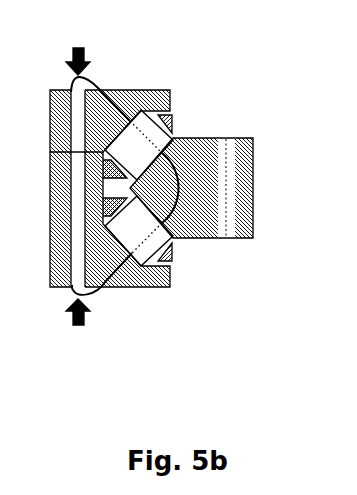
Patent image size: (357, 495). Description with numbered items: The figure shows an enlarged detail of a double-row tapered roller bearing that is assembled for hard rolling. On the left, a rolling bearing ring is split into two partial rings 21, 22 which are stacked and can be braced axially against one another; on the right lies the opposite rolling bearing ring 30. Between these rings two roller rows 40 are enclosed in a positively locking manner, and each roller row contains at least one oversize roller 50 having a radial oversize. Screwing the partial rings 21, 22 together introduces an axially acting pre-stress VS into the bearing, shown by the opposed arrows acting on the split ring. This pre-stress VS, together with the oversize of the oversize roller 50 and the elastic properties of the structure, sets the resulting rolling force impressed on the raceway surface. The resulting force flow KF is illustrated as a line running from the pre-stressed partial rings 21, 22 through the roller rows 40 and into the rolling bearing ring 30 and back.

The partial ring 21 is at (160, 90).
The partial ring 22 is at (120, 287).
The rolling bearing ring 30 is at (243, 177).
The roller rows 40 is at (173, 132).
The oversize roller 50 is at (153, 258).
The force flow KF is at (92, 86).
The pre-stress VS is at (88, 53).